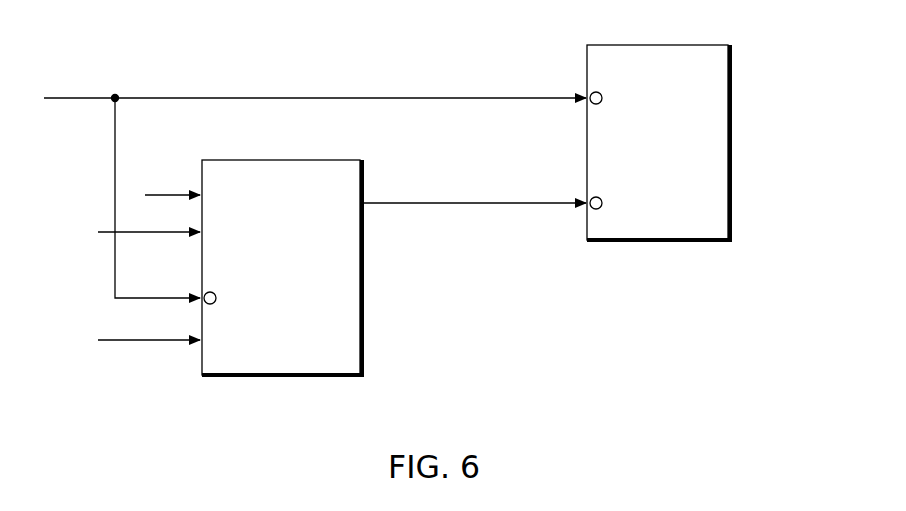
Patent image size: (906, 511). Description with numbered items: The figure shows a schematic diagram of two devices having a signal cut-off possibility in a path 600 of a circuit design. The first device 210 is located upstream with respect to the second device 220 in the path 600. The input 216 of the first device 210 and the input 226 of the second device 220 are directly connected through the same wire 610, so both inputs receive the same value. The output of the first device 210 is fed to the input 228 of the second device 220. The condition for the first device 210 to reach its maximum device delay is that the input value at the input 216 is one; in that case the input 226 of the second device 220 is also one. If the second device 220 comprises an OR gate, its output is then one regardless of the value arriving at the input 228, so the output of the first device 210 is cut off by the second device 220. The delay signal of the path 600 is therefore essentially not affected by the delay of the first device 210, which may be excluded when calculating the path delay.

The path 600 is at (190, 30).
The wire 610 is at (344, 96).
The first device 210 is at (362, 291).
The input of the first device 216 is at (218, 298).
The second device 220 is at (730, 148).
The input of the second device 226 is at (604, 98).
The input of the second device 228 is at (604, 203).